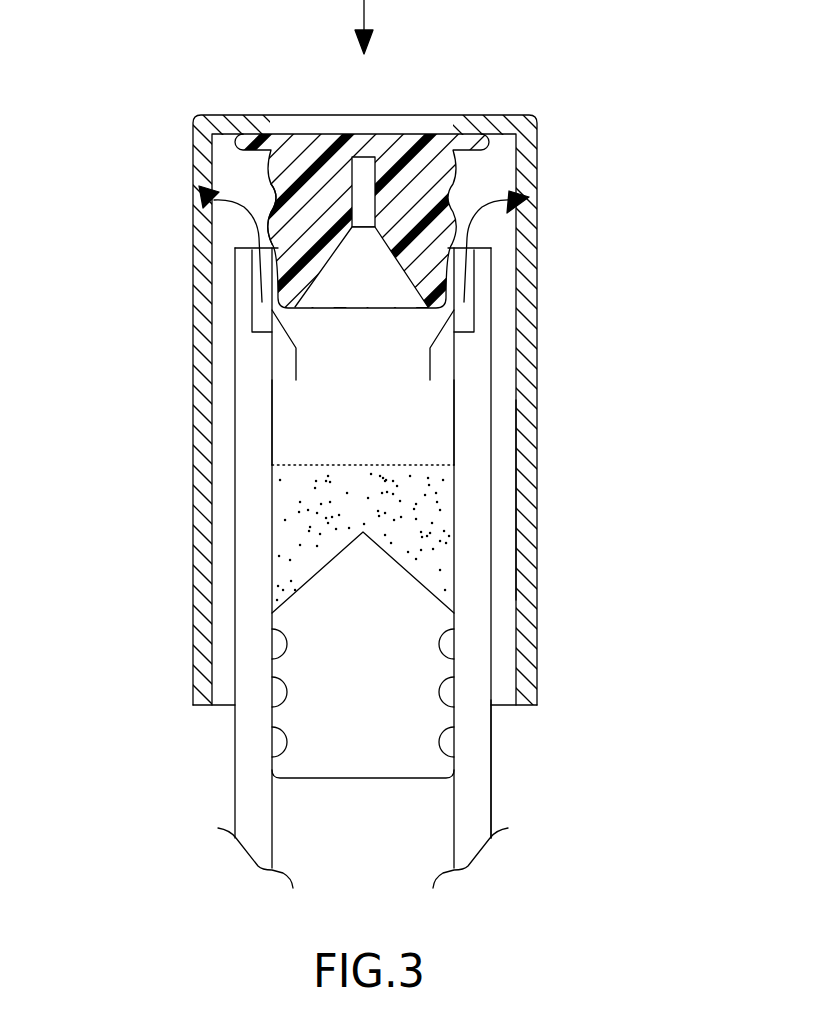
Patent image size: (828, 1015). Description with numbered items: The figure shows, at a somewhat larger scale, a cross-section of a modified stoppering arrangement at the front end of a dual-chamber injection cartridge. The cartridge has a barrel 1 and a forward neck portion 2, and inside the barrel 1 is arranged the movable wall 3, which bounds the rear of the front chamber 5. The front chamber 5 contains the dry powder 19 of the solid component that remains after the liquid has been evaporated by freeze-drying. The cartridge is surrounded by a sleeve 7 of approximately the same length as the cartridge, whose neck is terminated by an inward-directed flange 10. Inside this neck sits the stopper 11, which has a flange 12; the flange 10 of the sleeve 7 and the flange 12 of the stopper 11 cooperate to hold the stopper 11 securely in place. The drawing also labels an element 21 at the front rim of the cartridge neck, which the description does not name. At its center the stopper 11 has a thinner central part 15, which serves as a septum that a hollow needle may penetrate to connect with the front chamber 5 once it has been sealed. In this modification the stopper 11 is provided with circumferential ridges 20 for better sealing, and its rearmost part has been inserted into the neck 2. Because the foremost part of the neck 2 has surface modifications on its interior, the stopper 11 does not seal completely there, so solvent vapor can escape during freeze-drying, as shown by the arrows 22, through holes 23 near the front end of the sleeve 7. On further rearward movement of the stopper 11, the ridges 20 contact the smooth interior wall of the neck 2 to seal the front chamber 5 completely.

The barrel 1 is at (496, 768).
The forward neck portion 2 is at (456, 334).
The movable wall 3 is at (370, 663).
The front chamber 5 is at (368, 397).
The sleeve 7 is at (536, 490).
The inward-directed flange 10 is at (500, 115).
The stopper 11 is at (425, 213).
The flange 12 is at (372, 182).
The thinner central part 15 is at (345, 134).
The dry powder 19 is at (433, 533).
The circumferential ridges 20 is at (270, 230).
The barrel flange 21 is at (260, 320).
The arrows 22 is at (212, 206).
The holes 23 is at (199, 188).